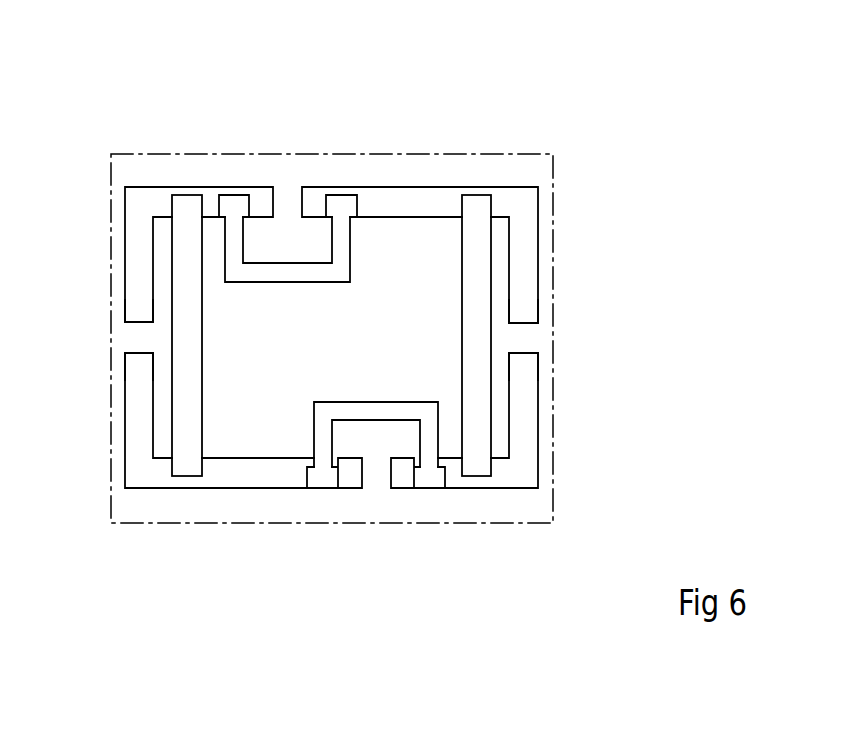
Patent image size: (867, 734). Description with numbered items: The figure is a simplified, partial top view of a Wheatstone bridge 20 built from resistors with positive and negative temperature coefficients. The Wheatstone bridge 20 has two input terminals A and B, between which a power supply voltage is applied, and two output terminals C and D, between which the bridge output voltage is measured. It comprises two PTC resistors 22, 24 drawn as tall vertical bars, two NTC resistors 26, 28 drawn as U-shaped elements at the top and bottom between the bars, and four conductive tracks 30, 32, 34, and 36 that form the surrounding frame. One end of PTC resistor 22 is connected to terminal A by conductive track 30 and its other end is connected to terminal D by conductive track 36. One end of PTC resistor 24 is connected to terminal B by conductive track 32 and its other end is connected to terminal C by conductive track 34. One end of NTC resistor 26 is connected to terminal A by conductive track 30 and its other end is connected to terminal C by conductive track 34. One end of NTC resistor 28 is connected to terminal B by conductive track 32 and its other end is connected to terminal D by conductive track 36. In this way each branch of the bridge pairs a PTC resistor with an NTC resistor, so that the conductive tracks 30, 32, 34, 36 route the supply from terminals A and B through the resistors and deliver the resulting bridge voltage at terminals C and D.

The Wheatstone bridge 20 is at (616, 116).
The PTC resistor 22 is at (470, 308).
The PTC resistor 24 is at (188, 356).
The NTC resistor 26 is at (332, 273).
The NTC resistor 28 is at (363, 409).
The conductive track 30 is at (453, 255).
The conductive track 32 is at (200, 420).
The conductive track 34 is at (156, 265).
The conductive track 36 is at (504, 415).
The input terminal A is at (527, 313).
The input terminal B is at (140, 370).
The output terminal C is at (140, 309).
The output terminal D is at (527, 372).